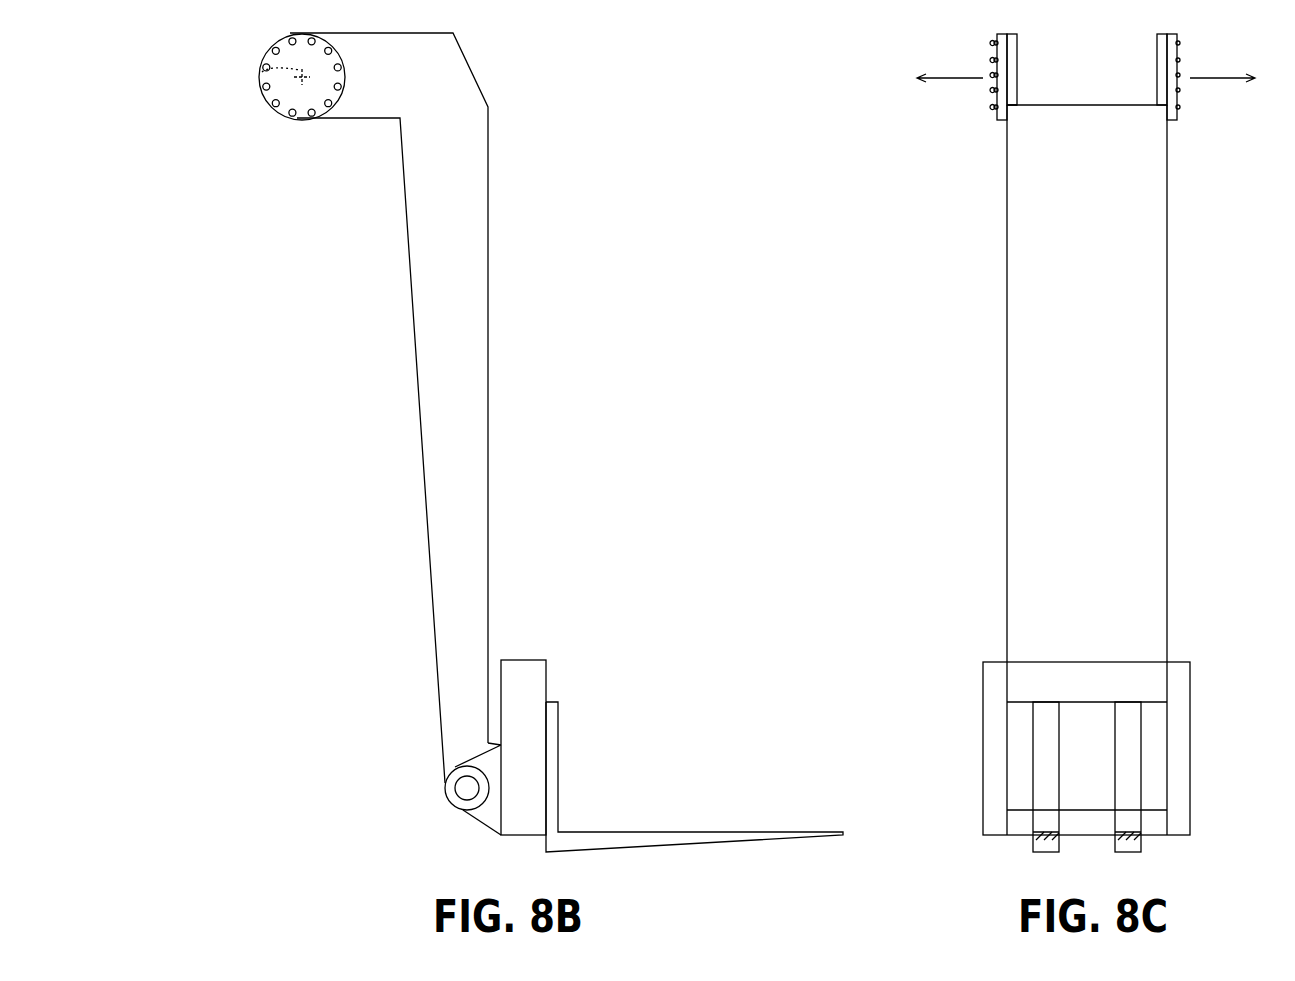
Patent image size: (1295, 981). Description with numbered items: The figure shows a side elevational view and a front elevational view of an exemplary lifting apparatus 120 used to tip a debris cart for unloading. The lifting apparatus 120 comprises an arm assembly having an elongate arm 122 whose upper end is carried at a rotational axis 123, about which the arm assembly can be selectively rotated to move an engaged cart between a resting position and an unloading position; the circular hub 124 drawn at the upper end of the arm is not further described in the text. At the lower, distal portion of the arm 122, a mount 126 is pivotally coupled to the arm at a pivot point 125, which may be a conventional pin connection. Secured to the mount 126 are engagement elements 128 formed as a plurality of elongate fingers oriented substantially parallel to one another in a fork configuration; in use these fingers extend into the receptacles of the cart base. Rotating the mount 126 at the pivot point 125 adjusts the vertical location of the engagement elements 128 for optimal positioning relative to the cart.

In FIG. 8B, the lifting apparatus 120 is at (546, 50).
In FIG. 8C, the lifting apparatus 120 is at (908, 50).
In FIG. 8B, the arm 122 is at (478, 333).
In FIG. 8C, the arm 122 is at (1005, 333).
In FIG. 8B, the rotational axis 123 is at (262, 72).
In FIG. 8C, the rotational axis 123 is at (962, 78).
In FIG. 8B, the hub 124 is at (295, 100).
In FIG. 8C, the hub 124 is at (995, 95).
In FIG. 8B, the pivot point 125 is at (445, 790).
In FIG. 8B, the mount 126 is at (525, 670).
In FIG. 8C, the mount 126 is at (995, 672).
In FIG. 8B, the engagement element 128 is at (667, 833).
In FIG. 8C, the engagement element 128 is at (1047, 843).